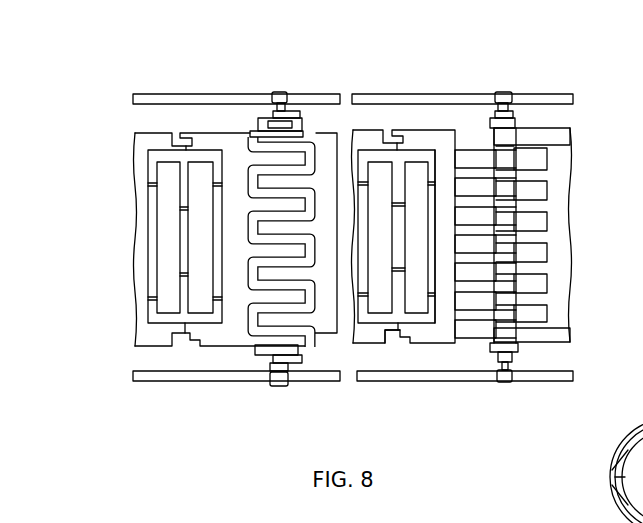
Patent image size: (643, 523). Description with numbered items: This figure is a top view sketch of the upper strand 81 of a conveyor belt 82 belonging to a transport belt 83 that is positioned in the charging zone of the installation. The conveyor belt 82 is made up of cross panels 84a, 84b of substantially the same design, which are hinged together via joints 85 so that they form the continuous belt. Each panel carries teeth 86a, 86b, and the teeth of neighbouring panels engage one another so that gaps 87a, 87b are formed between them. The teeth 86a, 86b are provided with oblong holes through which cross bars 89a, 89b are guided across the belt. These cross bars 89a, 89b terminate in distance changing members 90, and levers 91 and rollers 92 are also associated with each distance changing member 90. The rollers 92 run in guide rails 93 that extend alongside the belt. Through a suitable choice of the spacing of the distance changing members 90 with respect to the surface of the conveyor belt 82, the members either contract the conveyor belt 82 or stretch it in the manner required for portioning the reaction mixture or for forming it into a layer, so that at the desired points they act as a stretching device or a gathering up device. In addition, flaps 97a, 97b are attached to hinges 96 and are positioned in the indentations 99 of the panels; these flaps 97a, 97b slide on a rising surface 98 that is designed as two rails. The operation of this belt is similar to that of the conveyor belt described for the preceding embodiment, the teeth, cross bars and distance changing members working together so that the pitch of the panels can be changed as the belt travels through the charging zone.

The upper strand 81 is at (236, 242).
The conveyor belt 82 is at (236, 397).
The transport belt 83 is at (152, 412).
The cross panel 84a is at (419, 242).
The cross panel 84b is at (565, 215).
The joint 85 is at (403, 335).
The tooth 86a is at (513, 160).
The tooth 86b is at (522, 132).
The gap 87a is at (475, 323).
The gap 87b is at (540, 310).
The cross bar 89a is at (302, 124).
The cross bar 89b is at (256, 127).
The distance changing member 90 is at (528, 354).
The lever 91 is at (288, 382).
The roller 92 is at (278, 92).
The guide rail 93 is at (565, 369).
The hinge 96 is at (433, 165).
The flap 97a is at (415, 170).
The flap 97b is at (378, 170).
The rising surface 98 is at (402, 272).
The indentation 99 is at (181, 224).